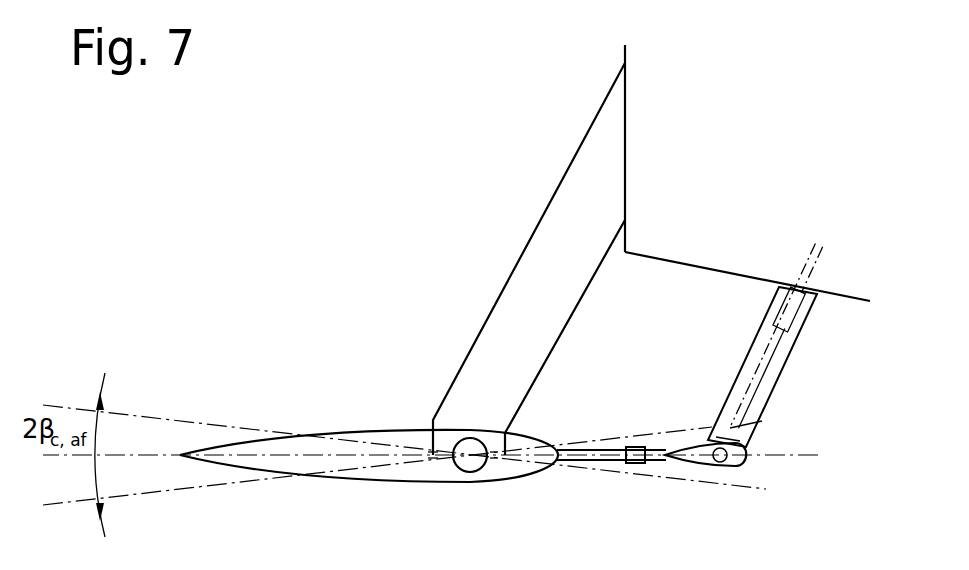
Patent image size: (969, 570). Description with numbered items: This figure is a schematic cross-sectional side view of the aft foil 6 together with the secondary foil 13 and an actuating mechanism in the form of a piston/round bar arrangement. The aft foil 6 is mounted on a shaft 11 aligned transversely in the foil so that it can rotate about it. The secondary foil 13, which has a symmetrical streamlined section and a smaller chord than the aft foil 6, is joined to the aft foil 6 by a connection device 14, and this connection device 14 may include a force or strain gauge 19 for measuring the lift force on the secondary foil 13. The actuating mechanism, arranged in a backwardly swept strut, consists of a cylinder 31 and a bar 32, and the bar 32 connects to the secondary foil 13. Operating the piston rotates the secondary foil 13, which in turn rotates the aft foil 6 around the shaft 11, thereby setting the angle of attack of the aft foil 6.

The aft foil 6 is at (330, 470).
The shaft 11 is at (474, 456).
The connection device 14 is at (590, 457).
The force or strain gauge 19 is at (638, 463).
The secondary foil 13 is at (742, 463).
The cylinder 31 is at (800, 305).
The bar 32 is at (770, 367).